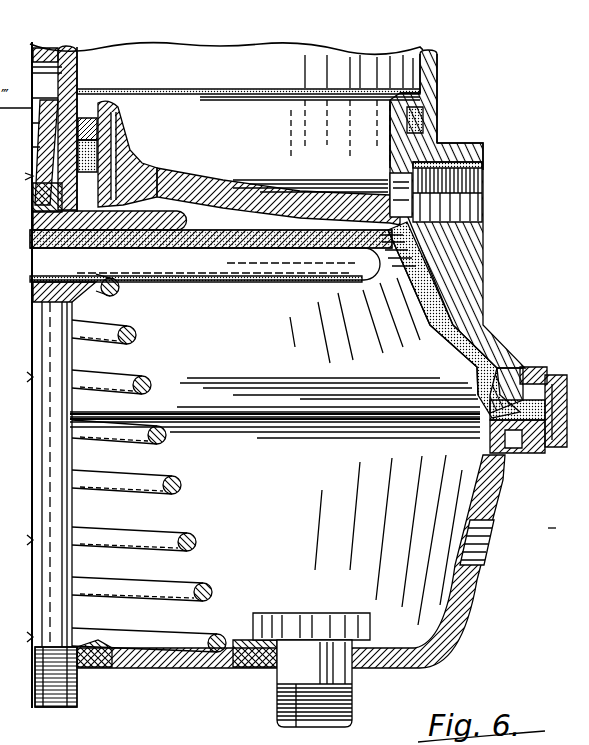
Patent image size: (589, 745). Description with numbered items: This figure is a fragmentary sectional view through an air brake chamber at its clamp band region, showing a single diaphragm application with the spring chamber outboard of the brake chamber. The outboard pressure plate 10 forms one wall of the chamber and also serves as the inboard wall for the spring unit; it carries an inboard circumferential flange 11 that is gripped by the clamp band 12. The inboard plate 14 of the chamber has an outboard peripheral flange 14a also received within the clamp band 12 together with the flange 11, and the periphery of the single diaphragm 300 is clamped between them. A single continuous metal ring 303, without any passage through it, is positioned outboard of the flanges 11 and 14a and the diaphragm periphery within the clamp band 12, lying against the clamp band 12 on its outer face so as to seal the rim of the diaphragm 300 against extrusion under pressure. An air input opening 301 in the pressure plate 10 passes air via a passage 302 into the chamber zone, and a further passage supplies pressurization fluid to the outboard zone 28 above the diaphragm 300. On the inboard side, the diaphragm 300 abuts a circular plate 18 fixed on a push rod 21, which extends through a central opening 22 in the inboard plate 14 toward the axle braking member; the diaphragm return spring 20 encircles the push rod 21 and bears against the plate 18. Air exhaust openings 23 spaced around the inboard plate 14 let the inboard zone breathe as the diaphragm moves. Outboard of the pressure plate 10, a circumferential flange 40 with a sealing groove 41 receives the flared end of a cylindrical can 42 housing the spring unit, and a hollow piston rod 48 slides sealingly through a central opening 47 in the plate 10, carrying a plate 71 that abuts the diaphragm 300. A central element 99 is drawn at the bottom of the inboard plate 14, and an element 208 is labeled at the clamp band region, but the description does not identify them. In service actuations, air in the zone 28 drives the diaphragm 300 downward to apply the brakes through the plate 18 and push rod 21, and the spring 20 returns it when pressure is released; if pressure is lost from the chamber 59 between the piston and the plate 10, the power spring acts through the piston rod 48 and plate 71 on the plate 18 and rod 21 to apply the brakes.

The outboard pressure plate 10 is at (468, 286).
The inboard circumferential flange 11 is at (500, 366).
The clamp band 12 is at (538, 372).
The inboard plate 14 is at (504, 506).
The outboard peripheral flange 14a is at (528, 447).
The circular plate 18 is at (293, 270).
The diaphragm return spring 20 is at (163, 443).
The push rod 21 is at (70, 511).
The opening 22 is at (80, 670).
The air exhaust openings 23 is at (478, 552).
The outboard zone 28 is at (214, 212).
The circumferential flange 40 is at (392, 143).
The circumferential groove 41 is at (428, 117).
The cylindrical can 42 is at (440, 68).
The opening 47 is at (213, 192).
The hollow piston rod 48 is at (74, 76).
The chamber 59 is at (206, 64).
The plate 71 is at (157, 216).
The center bolt 99 is at (290, 702).
The gasket 208 is at (568, 526).
The single diaphragm 300 is at (443, 358).
The air input opening 301 is at (483, 183).
The passage 302 is at (383, 205).
The continuous metal ring 303 is at (555, 390).